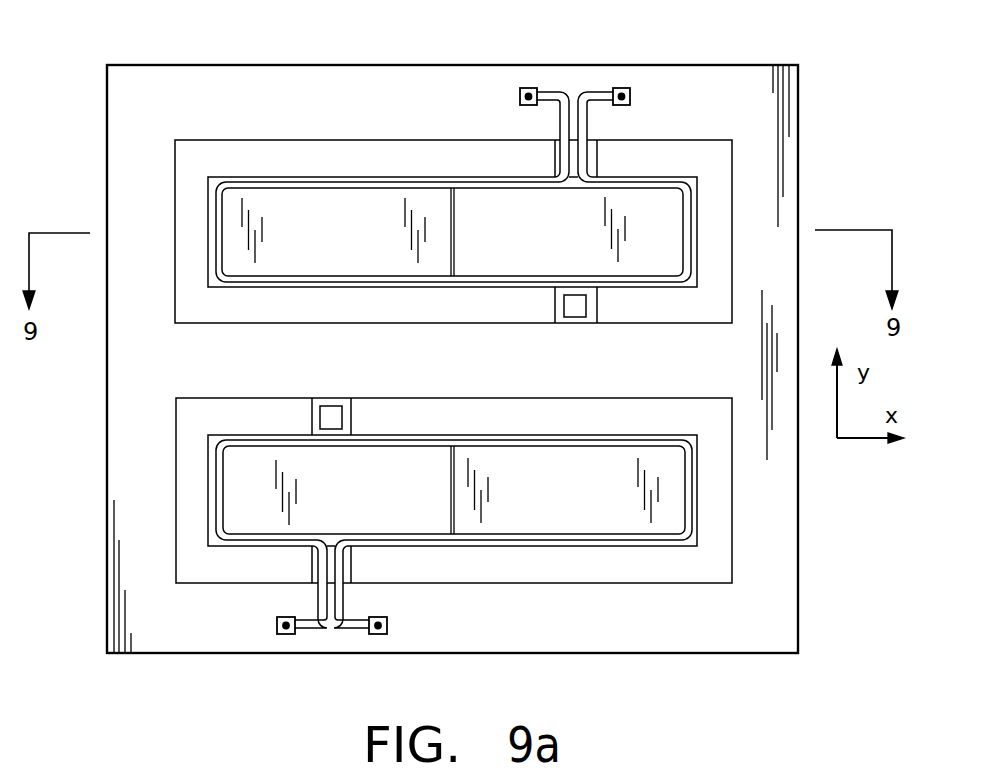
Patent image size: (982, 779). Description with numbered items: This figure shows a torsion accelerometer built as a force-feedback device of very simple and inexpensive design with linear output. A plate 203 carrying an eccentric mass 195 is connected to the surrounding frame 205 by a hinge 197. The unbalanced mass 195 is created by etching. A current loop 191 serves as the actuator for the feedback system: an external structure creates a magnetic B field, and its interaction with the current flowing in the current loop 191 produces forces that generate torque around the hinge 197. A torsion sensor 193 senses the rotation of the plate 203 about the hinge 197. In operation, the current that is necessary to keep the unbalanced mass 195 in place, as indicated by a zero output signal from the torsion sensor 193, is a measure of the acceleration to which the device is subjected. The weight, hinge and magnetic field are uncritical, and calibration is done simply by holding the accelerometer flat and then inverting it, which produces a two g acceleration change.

The current loop 191 is at (597, 92).
The torsion sensor 193 is at (575, 308).
The eccentric mass 195 is at (342, 250).
The hinge 197 is at (592, 151).
The plate 203 is at (549, 250).
The frame 205 is at (332, 100).